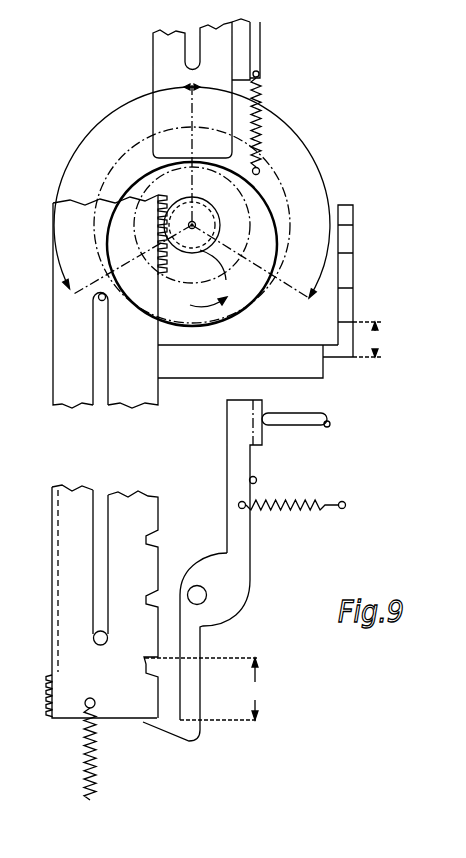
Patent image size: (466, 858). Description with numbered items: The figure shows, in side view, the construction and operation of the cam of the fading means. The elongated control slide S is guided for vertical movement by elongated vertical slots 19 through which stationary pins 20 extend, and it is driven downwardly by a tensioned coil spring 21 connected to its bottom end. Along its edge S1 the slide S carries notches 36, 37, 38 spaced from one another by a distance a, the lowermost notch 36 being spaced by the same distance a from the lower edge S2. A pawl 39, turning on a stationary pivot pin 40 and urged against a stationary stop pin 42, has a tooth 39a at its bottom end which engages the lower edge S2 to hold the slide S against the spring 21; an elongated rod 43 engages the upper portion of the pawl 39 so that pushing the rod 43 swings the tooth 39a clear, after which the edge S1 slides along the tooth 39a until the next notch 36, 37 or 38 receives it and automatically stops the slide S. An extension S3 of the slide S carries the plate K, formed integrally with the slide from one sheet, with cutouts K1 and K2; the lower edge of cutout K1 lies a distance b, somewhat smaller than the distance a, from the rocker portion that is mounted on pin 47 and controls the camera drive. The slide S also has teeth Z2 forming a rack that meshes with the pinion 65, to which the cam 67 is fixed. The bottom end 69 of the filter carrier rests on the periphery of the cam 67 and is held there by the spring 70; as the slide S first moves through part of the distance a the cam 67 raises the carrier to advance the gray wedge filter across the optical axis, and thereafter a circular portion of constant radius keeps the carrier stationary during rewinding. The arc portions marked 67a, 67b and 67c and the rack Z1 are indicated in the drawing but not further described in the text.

The elongated vertical slots 19 is at (93, 338).
The stationary pins 20 is at (100, 645).
The coil spring 21 is at (86, 744).
The notch 36 is at (157, 680).
The notch 37 is at (162, 597).
The notch 38 is at (160, 537).
The pawl 39 is at (248, 460).
The tooth 39a is at (183, 738).
The stationary pivot pin 40 is at (207, 595).
The stationary stop pin 42 is at (257, 480).
The elongated rod 43 is at (290, 420).
The pin 47 is at (310, 505).
The pinion 65 is at (202, 232).
The cam 67 is at (276, 252).
The cam arc section 67a is at (304, 146).
The cam arc section 67b is at (290, 300).
The cam arc section 67c is at (85, 140).
The bottom end of carrier 69 is at (159, 158).
The spring 70 is at (258, 76).
The plate K is at (353, 276).
The cutout K1 is at (353, 306).
The cutout K2 is at (353, 246).
The control slide S is at (53, 300).
The edge S1 is at (158, 497).
The lower edge S2 is at (135, 720).
The extension S3 is at (268, 377).
The rack Z1 is at (50, 700).
The teeth Z2 is at (166, 257).
The distance a is at (201, 689).
The distance b is at (367, 339).